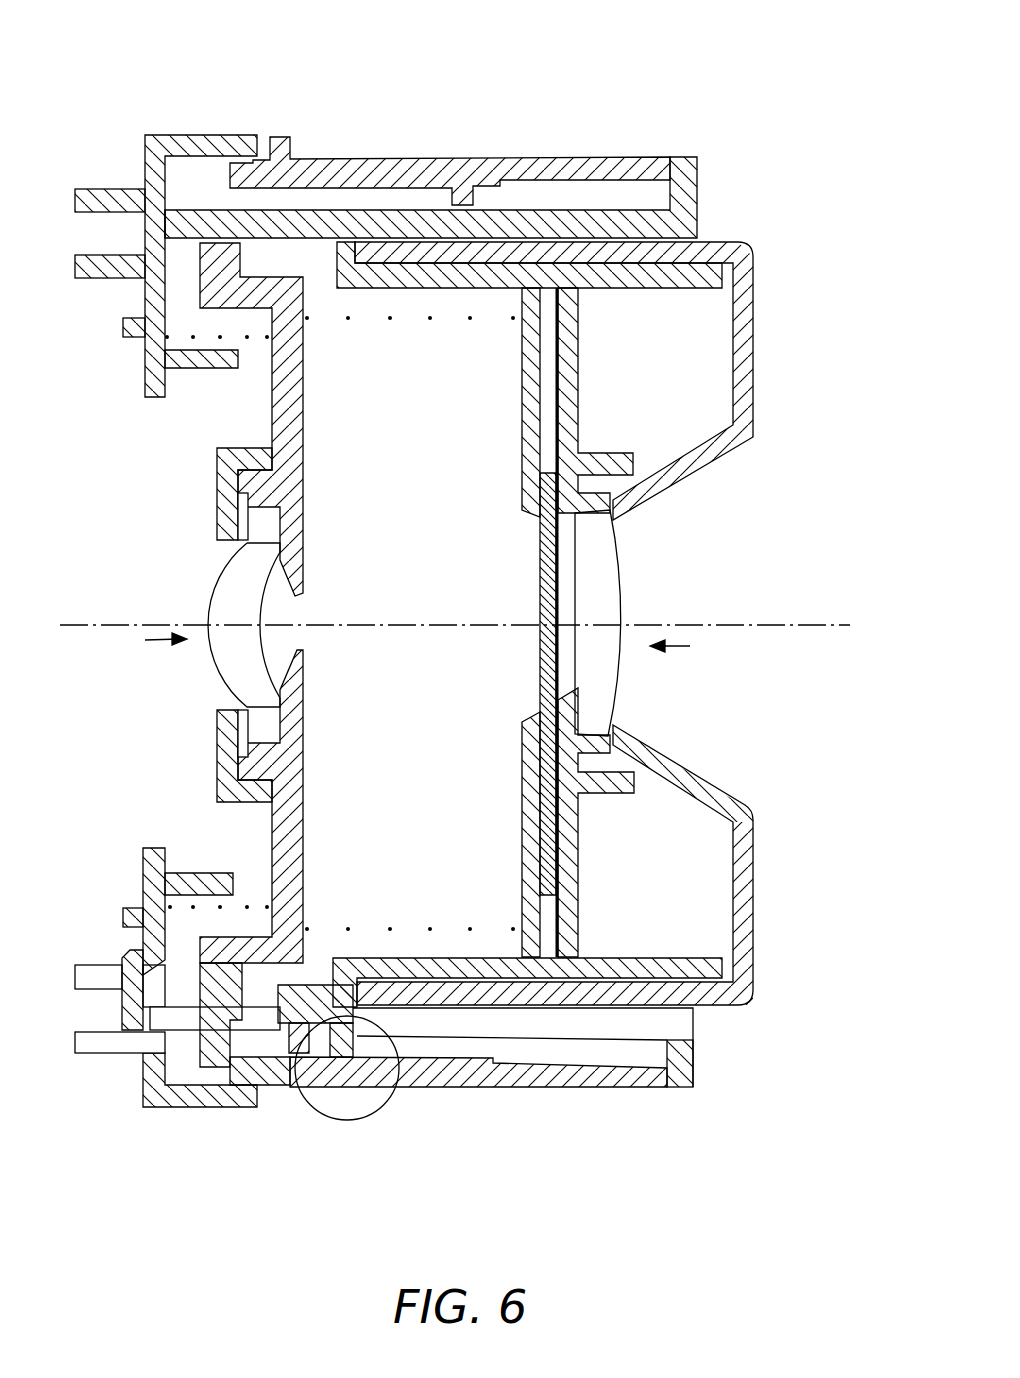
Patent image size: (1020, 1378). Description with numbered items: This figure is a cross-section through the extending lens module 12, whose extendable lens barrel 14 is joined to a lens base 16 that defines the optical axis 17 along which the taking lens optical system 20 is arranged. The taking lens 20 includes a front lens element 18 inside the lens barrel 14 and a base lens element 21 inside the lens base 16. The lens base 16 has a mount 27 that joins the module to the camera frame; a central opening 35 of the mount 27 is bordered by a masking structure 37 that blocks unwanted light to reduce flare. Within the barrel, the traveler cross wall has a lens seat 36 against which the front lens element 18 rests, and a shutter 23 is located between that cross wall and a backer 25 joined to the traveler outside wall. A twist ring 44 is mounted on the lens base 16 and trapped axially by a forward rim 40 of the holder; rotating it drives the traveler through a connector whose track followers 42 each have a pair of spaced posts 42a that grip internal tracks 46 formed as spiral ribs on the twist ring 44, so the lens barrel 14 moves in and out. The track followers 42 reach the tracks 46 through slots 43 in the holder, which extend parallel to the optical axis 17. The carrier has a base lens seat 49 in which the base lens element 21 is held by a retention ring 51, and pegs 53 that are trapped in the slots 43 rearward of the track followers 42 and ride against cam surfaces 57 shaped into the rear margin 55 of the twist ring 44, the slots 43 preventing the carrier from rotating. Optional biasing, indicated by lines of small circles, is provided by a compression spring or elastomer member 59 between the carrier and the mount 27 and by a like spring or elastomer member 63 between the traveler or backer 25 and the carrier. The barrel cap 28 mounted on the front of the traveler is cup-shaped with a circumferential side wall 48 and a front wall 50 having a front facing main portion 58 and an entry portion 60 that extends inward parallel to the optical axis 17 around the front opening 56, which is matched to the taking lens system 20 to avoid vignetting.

The lens module 12 is at (616, 116).
The lens barrel 14 is at (778, 246).
The lens base 16 is at (209, 126).
The optical axis 17 is at (70, 623).
The front lens element 18 is at (540, 638).
The taking lens optical system 20 is at (450, 720).
The base lens element 21 is at (266, 614).
The shutter 23 is at (540, 556).
The backer 25 is at (522, 393).
The mount 27 is at (128, 190).
The barrel cap 28 is at (760, 318).
The central opening 35 is at (145, 641).
The lens seat 36 is at (578, 527).
The masking structure 37 is at (218, 372).
The forward rim 40 is at (700, 188).
The track follower 42 is at (379, 1091).
The posts 42a is at (320, 1052).
The slots 43 is at (665, 1026).
The twist ring 44 is at (458, 166).
The tracks 46 is at (400, 1080).
The side wall 48 is at (757, 1002).
The base lens seat 49 is at (248, 565).
The front wall 50 is at (708, 474).
The retention ring 51 is at (220, 456).
The pegs 53 is at (143, 1068).
The rear margin 55 is at (165, 228).
The front opening 56 is at (690, 646).
The cam surfaces 57 is at (198, 1070).
The main portion 58 is at (697, 772).
The compression spring or elastomer member 59 is at (172, 338).
The entry portion 60 is at (712, 473).
The spring or elastomer member 63 is at (405, 326).